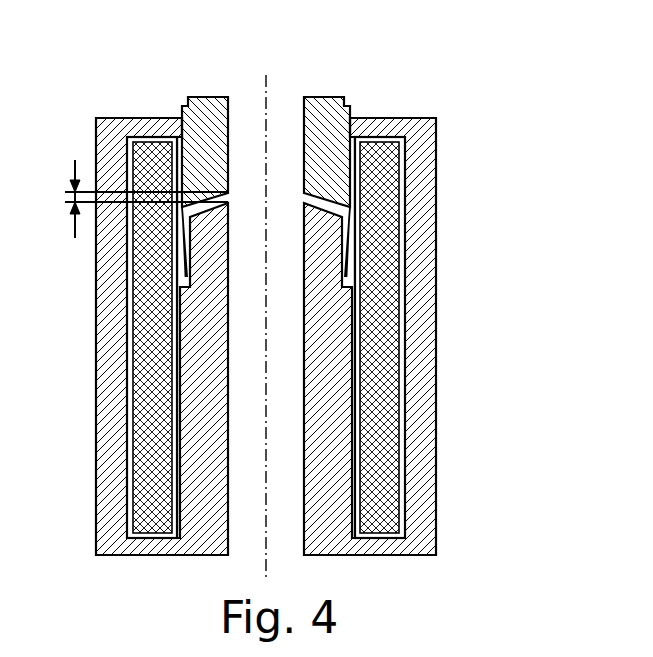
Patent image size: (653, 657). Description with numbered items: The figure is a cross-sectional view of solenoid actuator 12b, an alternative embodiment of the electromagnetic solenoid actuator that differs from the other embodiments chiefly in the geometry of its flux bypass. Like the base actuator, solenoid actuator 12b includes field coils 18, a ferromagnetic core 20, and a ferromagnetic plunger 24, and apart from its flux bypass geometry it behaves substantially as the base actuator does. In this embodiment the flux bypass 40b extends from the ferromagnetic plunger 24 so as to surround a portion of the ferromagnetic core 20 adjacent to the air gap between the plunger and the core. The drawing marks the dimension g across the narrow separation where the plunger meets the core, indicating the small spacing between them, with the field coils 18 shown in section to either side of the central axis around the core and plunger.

The solenoid actuator 12b is at (464, 84).
The ferromagnetic core 20 is at (105, 320).
The field coils 18 is at (152, 412).
The ferromagnetic plunger 24 is at (202, 117).
The flux bypass 40b is at (348, 246).
The gap g is at (139, 201).